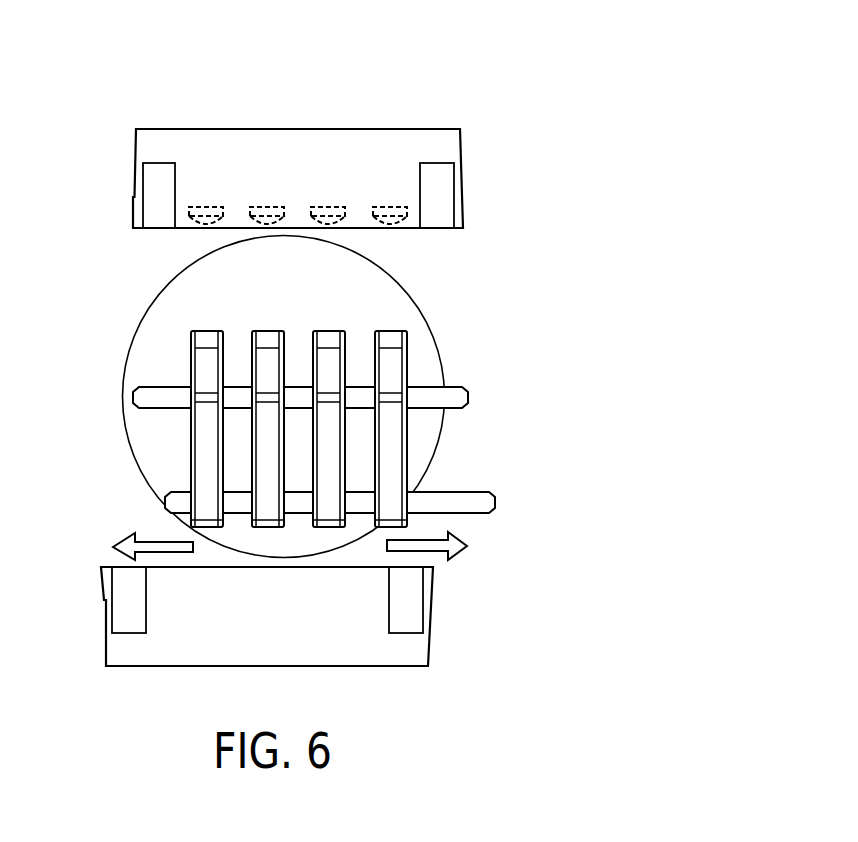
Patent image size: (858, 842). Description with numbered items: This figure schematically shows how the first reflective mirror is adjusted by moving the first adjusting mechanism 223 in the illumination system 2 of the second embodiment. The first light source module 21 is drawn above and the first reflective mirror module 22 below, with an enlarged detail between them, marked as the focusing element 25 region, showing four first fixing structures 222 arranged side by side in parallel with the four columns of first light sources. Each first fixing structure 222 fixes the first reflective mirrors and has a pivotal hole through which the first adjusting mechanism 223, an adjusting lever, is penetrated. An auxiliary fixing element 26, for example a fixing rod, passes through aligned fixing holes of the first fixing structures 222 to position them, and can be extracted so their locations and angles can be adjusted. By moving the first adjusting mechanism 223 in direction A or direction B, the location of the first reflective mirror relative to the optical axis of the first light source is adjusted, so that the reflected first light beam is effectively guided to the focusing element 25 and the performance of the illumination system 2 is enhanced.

The illumination system 2 is at (815, 152).
The first light source module 21 is at (348, 107).
The first reflective mirror module 22 is at (459, 664).
The focusing element 25 is at (155, 350).
The auxiliary fixing element 26 is at (435, 398).
The first fixing structure 222 is at (383, 450).
The first adjusting mechanism 223 is at (470, 498).